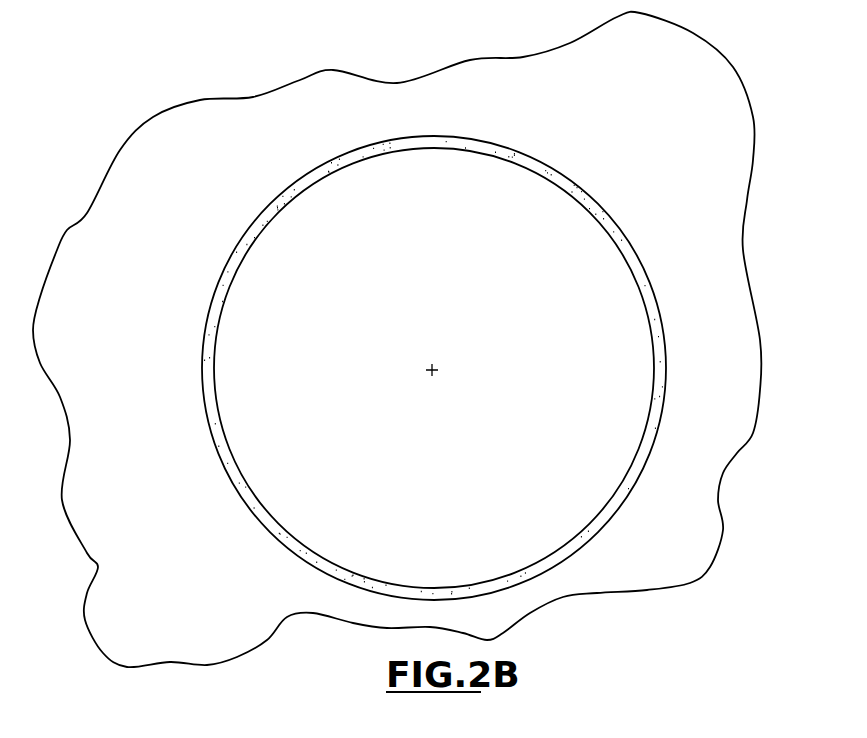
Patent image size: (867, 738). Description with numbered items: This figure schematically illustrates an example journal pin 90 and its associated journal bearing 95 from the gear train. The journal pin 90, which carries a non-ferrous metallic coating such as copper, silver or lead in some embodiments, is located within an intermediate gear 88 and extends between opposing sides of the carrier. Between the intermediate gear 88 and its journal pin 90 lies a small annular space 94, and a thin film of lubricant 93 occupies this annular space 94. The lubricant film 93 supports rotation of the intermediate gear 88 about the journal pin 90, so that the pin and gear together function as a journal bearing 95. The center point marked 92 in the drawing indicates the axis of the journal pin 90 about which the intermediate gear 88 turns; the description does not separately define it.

The intermediate gear 88 is at (138, 519).
The journal pin 90 is at (406, 476).
The center of hole 92 is at (434, 368).
The thin film of lubricant 93 is at (292, 190).
The annular space 94 is at (200, 285).
The journal bearing 95 is at (592, 168).